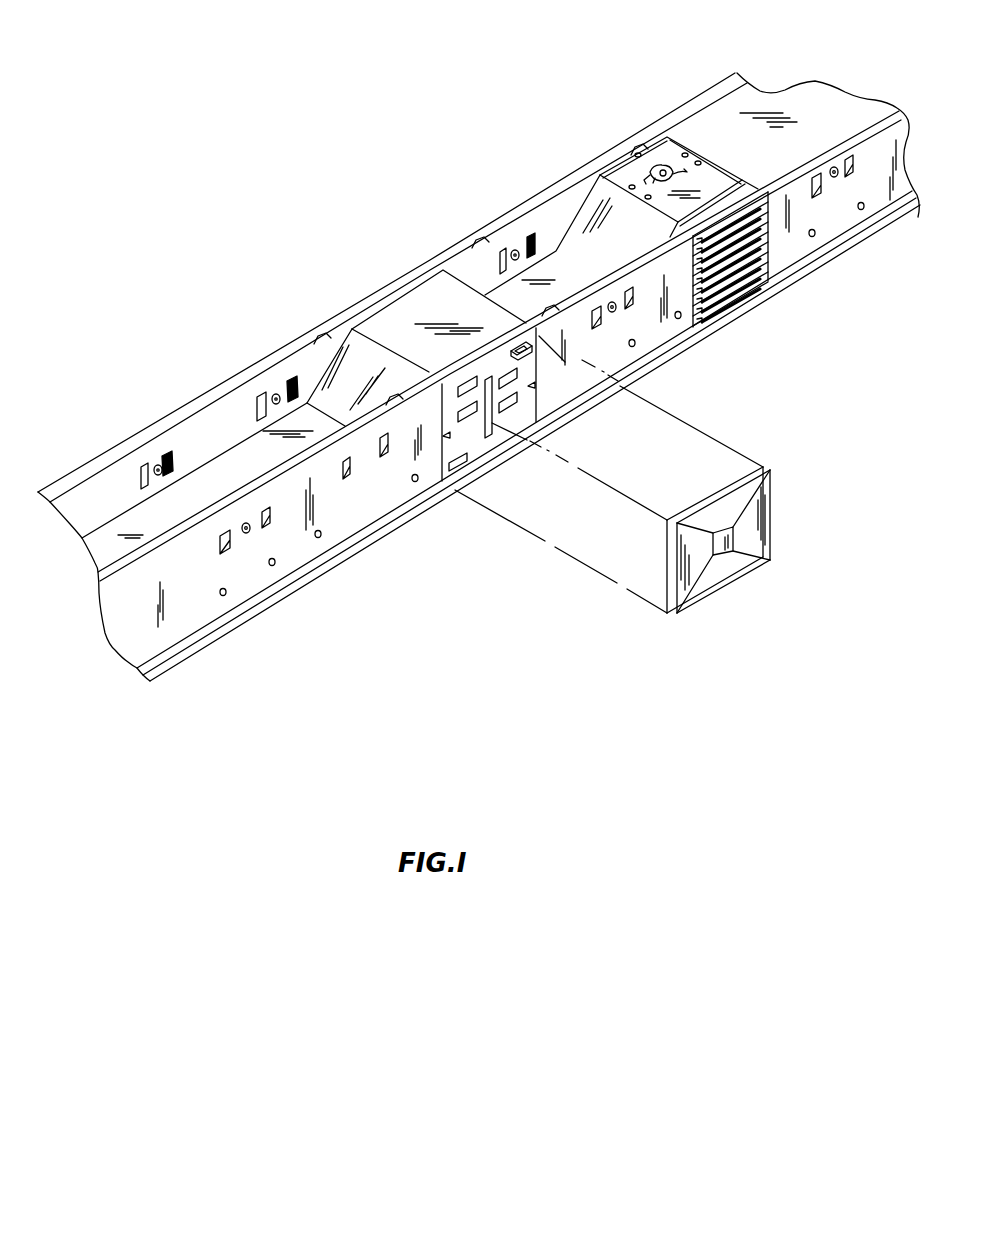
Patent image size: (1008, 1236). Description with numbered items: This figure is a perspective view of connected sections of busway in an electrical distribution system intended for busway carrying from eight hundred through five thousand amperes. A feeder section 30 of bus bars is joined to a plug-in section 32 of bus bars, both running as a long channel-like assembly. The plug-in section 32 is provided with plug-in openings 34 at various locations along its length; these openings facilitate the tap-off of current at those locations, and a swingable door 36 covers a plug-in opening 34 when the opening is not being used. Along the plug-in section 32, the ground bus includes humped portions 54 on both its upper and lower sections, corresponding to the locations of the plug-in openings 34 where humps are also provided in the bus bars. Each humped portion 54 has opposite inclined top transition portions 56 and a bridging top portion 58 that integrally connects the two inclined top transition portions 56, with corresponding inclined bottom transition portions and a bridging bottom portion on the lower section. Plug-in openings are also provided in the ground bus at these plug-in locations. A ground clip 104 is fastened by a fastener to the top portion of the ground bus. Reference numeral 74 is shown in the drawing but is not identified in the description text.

The feeder section 30 is at (479, 341).
The plug-in section 32 is at (509, 396).
The plug-in opening 34 is at (752, 312).
The swingable door 36 is at (713, 589).
The humped portion 54 is at (440, 298).
The inclined top transition portion 56 is at (360, 370).
The bridging top portion 58 is at (226, 476).
The holes 74 is at (277, 566).
The ground clip 104 is at (521, 347).